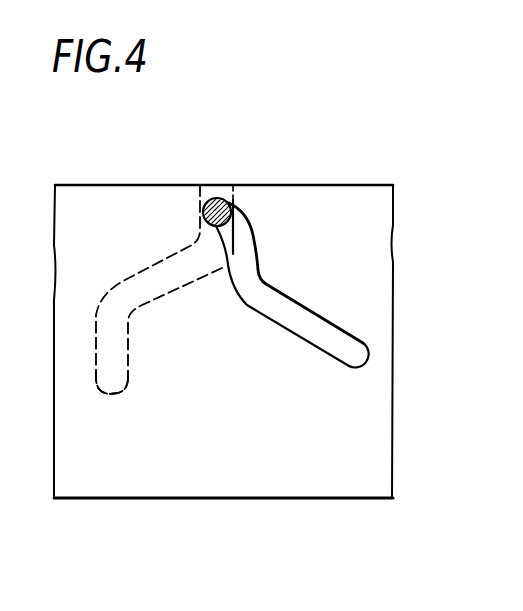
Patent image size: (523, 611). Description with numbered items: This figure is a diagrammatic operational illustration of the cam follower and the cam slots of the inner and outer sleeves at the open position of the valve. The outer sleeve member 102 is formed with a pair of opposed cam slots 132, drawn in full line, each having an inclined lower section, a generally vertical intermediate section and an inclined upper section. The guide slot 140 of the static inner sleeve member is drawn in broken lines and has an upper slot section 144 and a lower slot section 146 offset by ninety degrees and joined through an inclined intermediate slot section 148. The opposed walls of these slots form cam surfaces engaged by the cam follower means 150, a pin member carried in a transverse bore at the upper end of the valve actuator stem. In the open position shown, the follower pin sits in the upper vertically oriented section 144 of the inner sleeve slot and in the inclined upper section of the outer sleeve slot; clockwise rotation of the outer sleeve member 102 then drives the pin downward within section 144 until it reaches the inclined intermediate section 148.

The outer sleeve member 102 is at (382, 268).
The cam slots 132 is at (248, 258).
The cam slot 140 is at (159, 299).
The upper slot section 144 is at (238, 197).
The lower slot section 146 is at (123, 377).
The intermediate slot section 148 is at (168, 297).
The cam follower means 150 is at (218, 199).